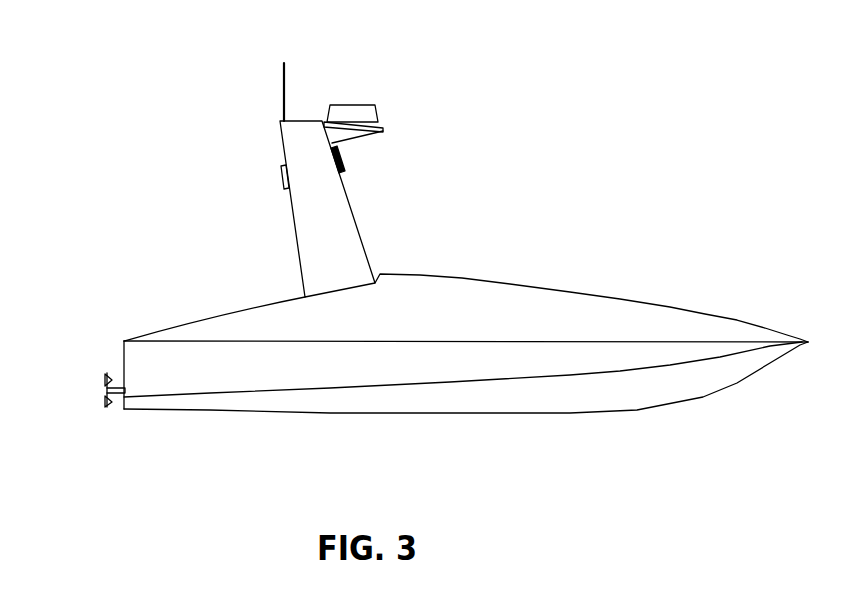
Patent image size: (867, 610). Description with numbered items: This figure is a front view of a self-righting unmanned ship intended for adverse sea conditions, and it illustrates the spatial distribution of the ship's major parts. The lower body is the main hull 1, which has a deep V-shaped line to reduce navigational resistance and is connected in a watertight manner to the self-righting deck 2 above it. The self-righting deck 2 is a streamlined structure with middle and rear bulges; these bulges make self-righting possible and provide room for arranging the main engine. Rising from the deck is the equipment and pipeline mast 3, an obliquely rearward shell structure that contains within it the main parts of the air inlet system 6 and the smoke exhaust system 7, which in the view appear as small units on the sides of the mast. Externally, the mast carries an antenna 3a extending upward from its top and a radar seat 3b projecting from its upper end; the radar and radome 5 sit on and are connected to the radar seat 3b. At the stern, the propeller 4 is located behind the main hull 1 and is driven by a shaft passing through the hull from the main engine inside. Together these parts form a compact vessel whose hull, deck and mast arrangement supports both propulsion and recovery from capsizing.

The main hull 1 is at (353, 400).
The self-righting deck 2 is at (462, 278).
The equipment and pipeline mast 3 is at (280, 213).
The antenna 3a is at (284, 63).
The radar seat 3b is at (383, 129).
The propeller 4 is at (105, 392).
The radar and radome 5 is at (352, 105).
The air inlet system 6 is at (350, 170).
The smoke exhaust system 7 is at (267, 160).